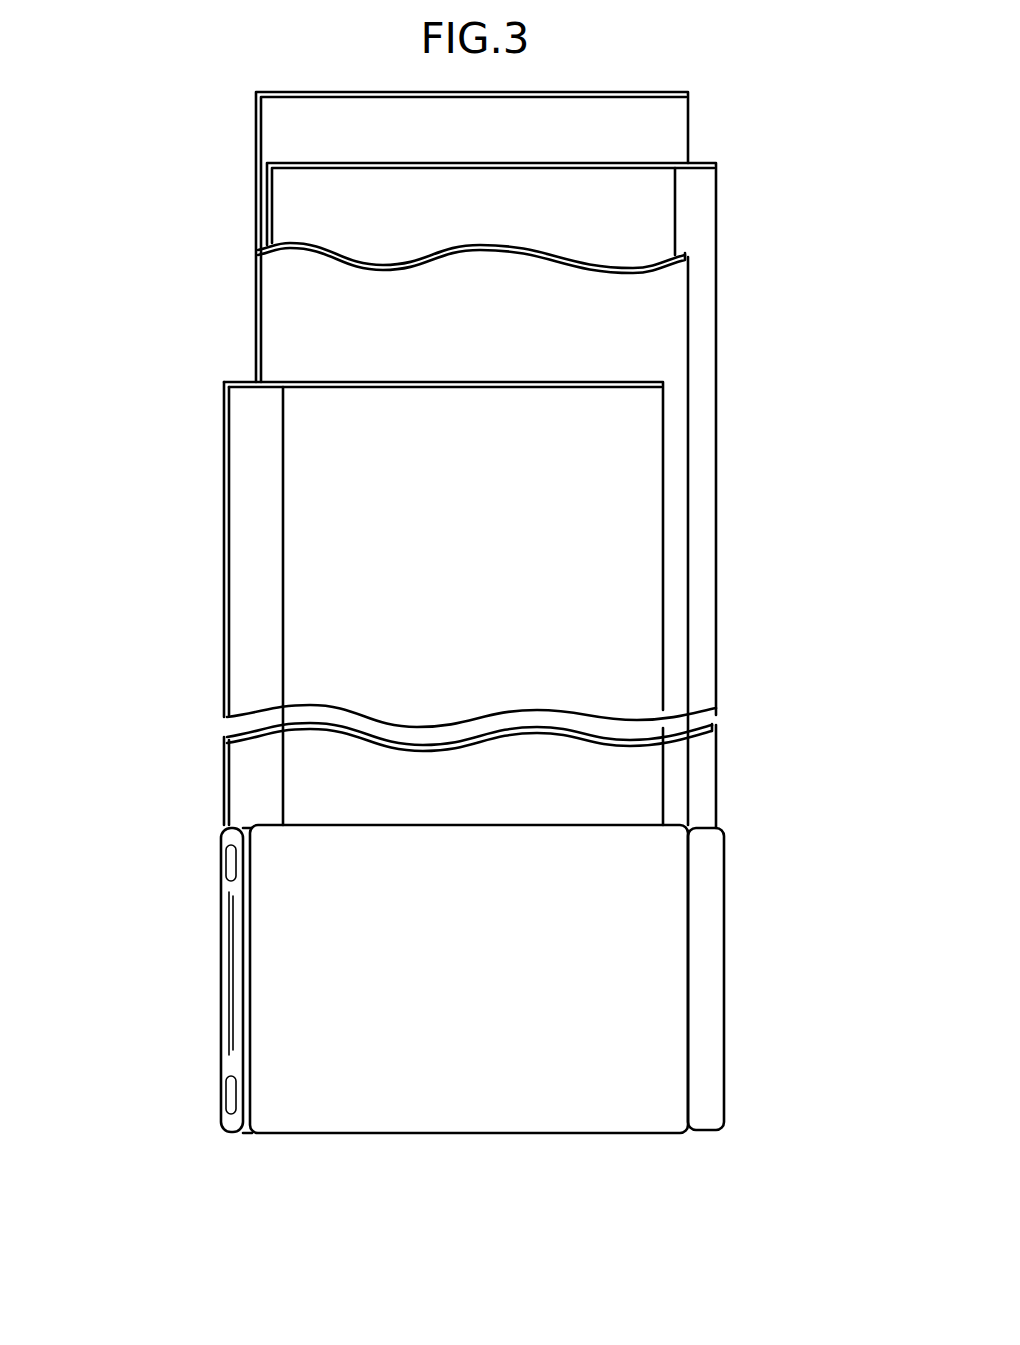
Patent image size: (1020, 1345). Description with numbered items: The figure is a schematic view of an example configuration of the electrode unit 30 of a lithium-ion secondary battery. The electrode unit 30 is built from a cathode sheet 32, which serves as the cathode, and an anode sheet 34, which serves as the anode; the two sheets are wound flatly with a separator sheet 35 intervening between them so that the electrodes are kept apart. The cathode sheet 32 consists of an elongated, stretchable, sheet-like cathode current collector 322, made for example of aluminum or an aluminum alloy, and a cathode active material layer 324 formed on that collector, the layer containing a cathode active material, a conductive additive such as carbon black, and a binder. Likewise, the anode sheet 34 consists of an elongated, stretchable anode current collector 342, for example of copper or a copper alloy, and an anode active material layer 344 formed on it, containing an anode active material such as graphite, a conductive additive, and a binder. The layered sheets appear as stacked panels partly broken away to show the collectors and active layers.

The electrode unit 30 is at (476, 1166).
The cathode sheet 32 is at (371, 603).
The cathode current collector 322 is at (245, 533).
The cathode active material layer 324 is at (312, 458).
The anode sheet 34 is at (592, 495).
The anode current collector 342 is at (862, 162).
The anode active material layer 344 is at (634, 190).
The separator sheet 35 is at (634, 115).